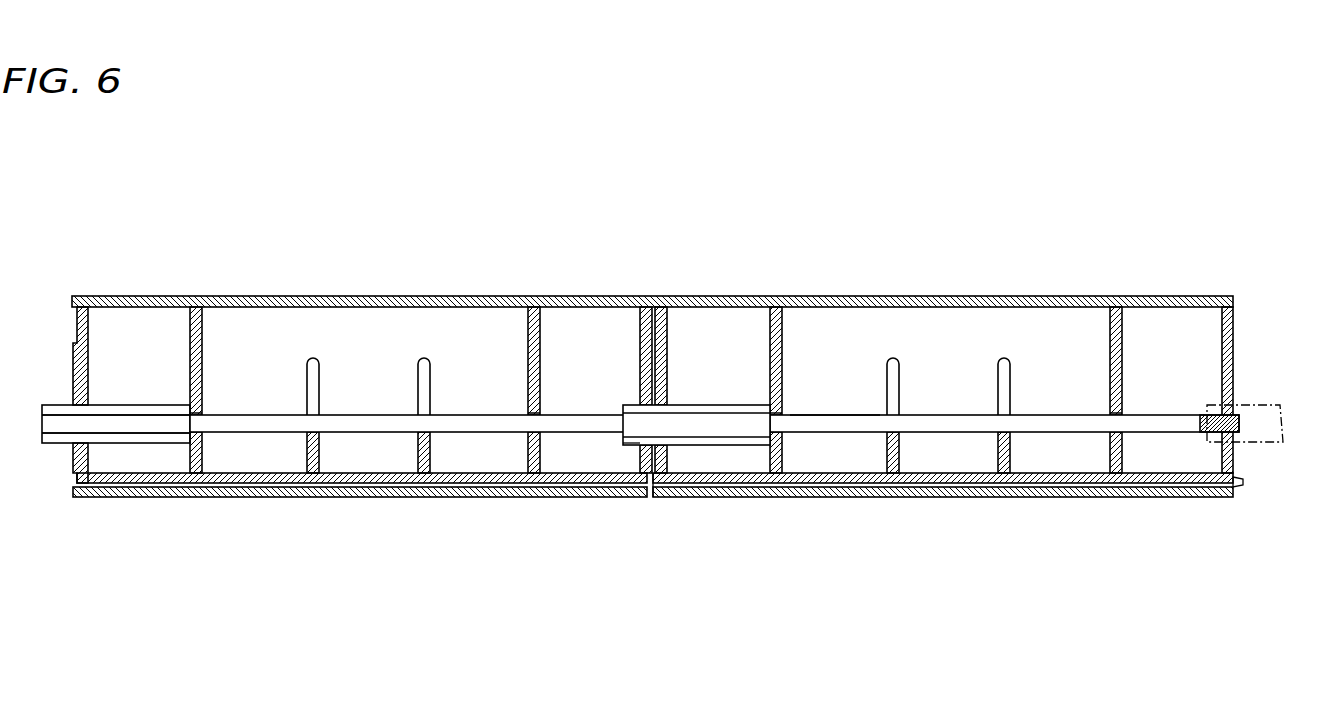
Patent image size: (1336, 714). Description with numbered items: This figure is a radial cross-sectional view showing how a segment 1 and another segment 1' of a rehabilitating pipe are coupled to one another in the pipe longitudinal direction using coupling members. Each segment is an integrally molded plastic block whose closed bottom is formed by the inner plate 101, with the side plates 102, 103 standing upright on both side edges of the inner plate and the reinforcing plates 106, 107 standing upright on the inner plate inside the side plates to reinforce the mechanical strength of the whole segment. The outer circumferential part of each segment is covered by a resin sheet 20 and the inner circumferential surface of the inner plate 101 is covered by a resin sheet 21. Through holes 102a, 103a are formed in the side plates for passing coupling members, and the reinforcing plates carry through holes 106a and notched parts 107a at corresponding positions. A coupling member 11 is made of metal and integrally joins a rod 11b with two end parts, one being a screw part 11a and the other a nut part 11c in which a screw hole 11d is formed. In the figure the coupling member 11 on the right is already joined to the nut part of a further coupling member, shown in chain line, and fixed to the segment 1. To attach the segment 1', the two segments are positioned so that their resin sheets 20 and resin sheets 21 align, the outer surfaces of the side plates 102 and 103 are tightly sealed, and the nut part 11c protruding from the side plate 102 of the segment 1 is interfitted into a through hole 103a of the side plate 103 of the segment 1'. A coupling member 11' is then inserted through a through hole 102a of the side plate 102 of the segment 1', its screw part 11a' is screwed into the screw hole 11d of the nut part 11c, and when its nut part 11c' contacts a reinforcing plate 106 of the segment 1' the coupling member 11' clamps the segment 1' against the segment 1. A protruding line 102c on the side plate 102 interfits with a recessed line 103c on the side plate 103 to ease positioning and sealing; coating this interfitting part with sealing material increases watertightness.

The segment 1 is at (943, 464).
The another segment 1' is at (359, 487).
The coupling member 11 is at (1004, 510).
The coupling member 11' is at (407, 519).
The screw part 11a is at (1207, 380).
The screw part 11a' is at (662, 379).
The rod 11b is at (818, 415).
The nut part 11c is at (967, 384).
The nut part 11c' is at (116, 381).
The screw hole 11d is at (706, 420).
The resin sheet 20 is at (390, 297).
The resin sheet 21 is at (125, 497).
The inner plate 101 is at (412, 497).
The side plate 102 is at (73, 378).
The through hole 102a is at (72, 447).
The protruding line 102c is at (657, 497).
The side plate 103 is at (643, 328).
The through hole 103a is at (630, 446).
The recessed line 103c is at (640, 478).
The reinforcing plate 106 is at (196, 482).
The through hole 106a is at (205, 408).
The reinforcing plate 107 is at (305, 480).
The notched part 107a is at (316, 406).